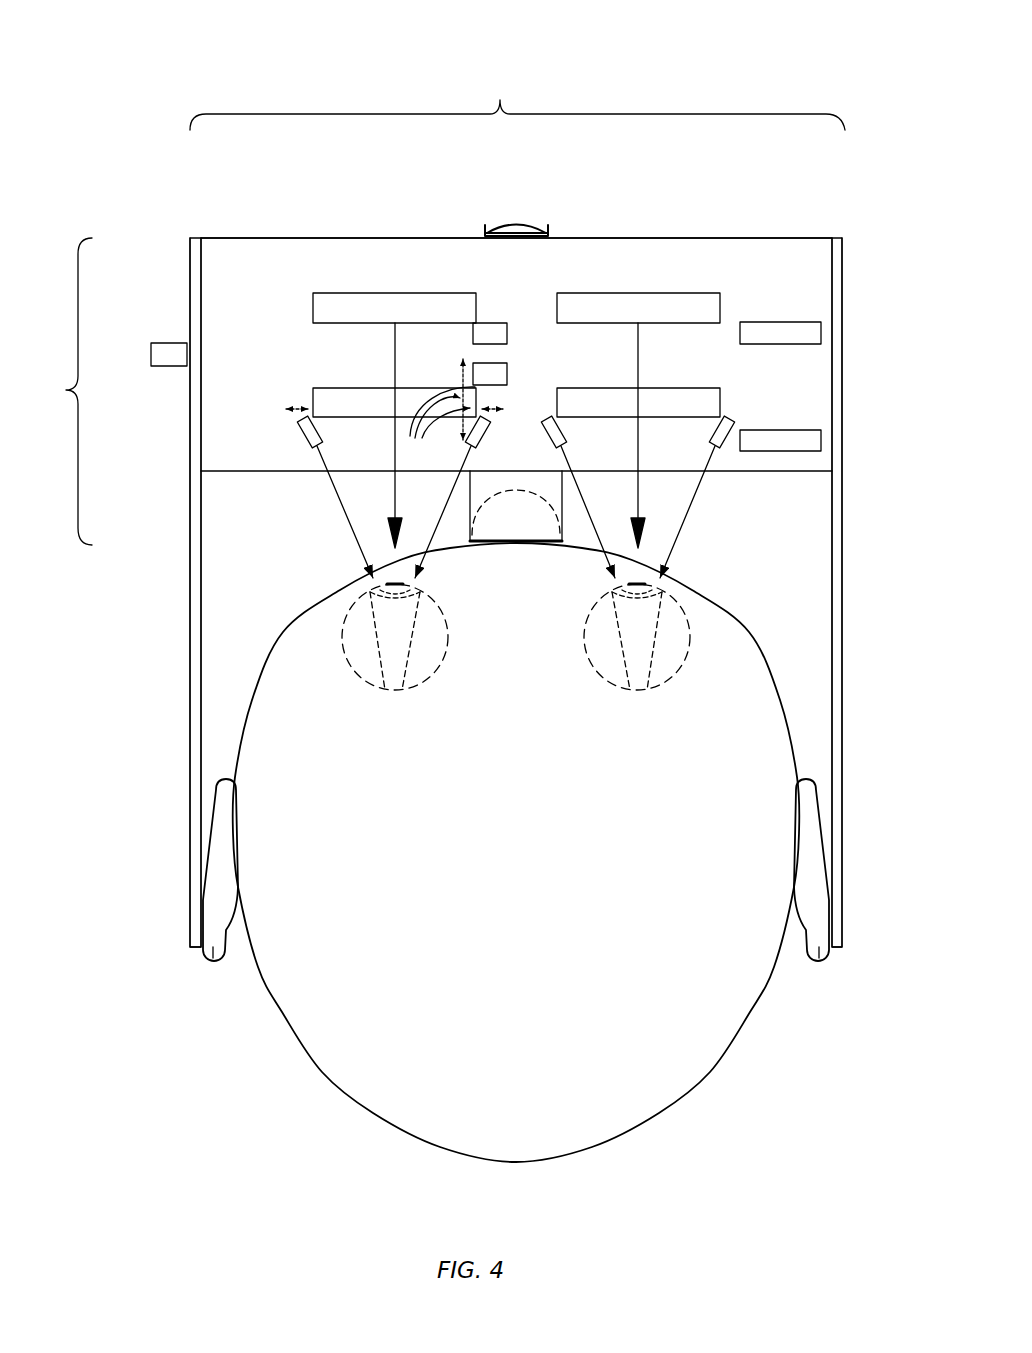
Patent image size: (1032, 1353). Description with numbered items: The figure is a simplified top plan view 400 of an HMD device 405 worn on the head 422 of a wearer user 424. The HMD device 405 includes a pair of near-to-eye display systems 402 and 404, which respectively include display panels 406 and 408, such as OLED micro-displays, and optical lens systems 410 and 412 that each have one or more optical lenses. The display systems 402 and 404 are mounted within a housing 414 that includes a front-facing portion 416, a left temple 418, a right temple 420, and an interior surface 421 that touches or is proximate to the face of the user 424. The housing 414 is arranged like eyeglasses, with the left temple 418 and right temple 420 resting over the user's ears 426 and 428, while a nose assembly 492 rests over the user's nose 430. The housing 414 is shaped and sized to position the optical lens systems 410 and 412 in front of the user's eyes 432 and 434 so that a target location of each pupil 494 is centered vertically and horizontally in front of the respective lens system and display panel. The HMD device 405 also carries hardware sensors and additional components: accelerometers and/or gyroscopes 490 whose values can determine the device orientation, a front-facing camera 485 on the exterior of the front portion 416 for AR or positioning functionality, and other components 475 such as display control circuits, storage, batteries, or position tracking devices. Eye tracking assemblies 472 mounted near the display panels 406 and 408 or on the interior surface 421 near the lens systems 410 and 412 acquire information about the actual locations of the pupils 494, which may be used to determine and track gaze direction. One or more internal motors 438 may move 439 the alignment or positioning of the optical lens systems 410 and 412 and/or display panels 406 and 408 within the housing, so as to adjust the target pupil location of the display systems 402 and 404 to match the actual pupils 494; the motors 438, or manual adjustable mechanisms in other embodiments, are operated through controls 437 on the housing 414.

The top plan view 400 is at (812, 66).
The near-to-eye display system 402 is at (258, 268).
The near-to-eye display system 404 is at (770, 272).
The HMD device 405 is at (432, 310).
The display panel 406 is at (366, 292).
The display panel 408 is at (690, 292).
The optical lens system 410 is at (325, 388).
The optical lens system 412 is at (697, 388).
The housing 414 is at (190, 237).
The front-facing portion 416 is at (356, 237).
The left temple 418 is at (190, 712).
The right temple 420 is at (843, 712).
The interior surface 421 is at (247, 476).
The head 422 is at (620, 1145).
The wearer user 424 is at (531, 875).
The ear 426 is at (212, 962).
The ear 428 is at (820, 960).
The nose 430 is at (543, 510).
The eye 432 is at (357, 675).
The eye 434 is at (675, 675).
The control 437 is at (170, 343).
The internal motor 438 is at (507, 374).
The movement 439 is at (437, 426).
The eye tracking assembly 472 is at (300, 427).
The other components 475 is at (822, 333).
The camera 485 is at (522, 224).
The accelerometers and/or gyroscopes 490 is at (822, 440).
The nose assembly 492 is at (468, 508).
The pupil 494 is at (620, 589).